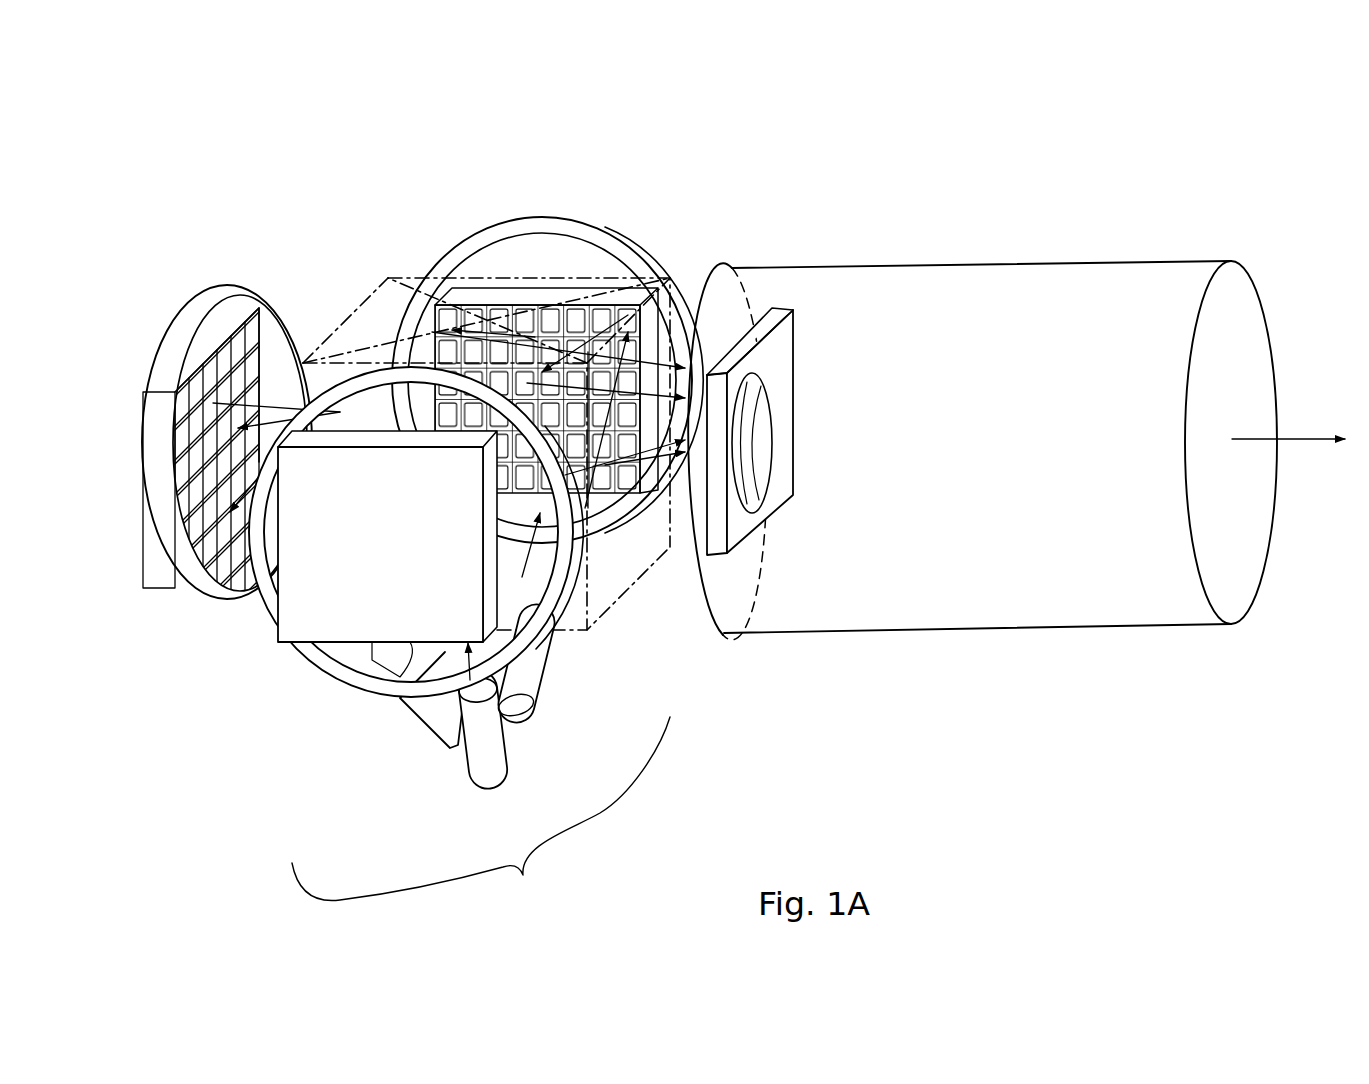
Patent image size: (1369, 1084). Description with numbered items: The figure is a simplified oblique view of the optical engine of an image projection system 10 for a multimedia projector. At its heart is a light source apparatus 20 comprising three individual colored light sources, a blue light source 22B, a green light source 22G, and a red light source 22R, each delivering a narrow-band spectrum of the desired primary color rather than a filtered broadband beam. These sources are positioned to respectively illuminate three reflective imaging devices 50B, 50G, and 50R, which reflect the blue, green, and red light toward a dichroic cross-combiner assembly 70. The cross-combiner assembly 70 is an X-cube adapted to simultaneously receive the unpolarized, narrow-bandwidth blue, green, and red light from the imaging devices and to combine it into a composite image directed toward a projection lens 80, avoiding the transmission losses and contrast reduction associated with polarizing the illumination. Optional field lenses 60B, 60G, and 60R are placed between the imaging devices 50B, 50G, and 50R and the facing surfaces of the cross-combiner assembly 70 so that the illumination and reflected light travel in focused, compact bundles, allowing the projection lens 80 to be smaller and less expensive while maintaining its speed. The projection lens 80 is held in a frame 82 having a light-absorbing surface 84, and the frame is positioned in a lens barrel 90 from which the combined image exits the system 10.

The image projection system 10 is at (722, 197).
The light source apparatus 20 is at (481, 815).
The green light source 22G is at (415, 718).
The blue light source 22B is at (467, 770).
The red light source 22R is at (537, 690).
The reflective imaging device 50G is at (150, 575).
The reflective imaging device 50B is at (400, 556).
The reflective imaging device 50R is at (467, 297).
The field lens 60G is at (190, 313).
The field lens 60B is at (327, 660).
The field lens 60R is at (546, 225).
The dichroic cross-combiner assembly 70 is at (363, 300).
The projection lens 80 is at (847, 378).
The frame 82 is at (783, 418).
The light-absorbing surface 84 is at (763, 312).
The lens barrel 90 is at (1088, 268).